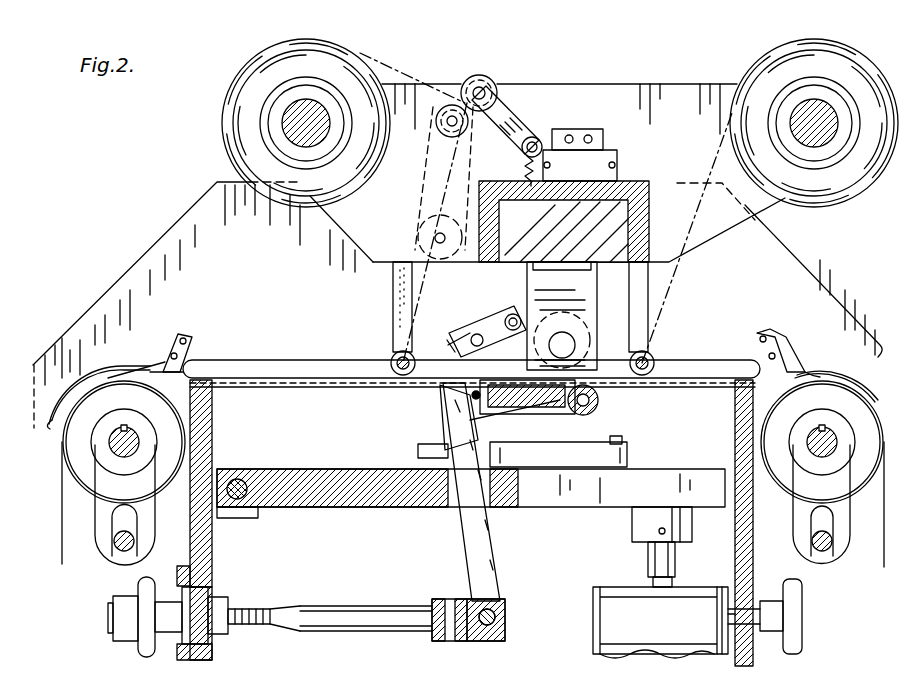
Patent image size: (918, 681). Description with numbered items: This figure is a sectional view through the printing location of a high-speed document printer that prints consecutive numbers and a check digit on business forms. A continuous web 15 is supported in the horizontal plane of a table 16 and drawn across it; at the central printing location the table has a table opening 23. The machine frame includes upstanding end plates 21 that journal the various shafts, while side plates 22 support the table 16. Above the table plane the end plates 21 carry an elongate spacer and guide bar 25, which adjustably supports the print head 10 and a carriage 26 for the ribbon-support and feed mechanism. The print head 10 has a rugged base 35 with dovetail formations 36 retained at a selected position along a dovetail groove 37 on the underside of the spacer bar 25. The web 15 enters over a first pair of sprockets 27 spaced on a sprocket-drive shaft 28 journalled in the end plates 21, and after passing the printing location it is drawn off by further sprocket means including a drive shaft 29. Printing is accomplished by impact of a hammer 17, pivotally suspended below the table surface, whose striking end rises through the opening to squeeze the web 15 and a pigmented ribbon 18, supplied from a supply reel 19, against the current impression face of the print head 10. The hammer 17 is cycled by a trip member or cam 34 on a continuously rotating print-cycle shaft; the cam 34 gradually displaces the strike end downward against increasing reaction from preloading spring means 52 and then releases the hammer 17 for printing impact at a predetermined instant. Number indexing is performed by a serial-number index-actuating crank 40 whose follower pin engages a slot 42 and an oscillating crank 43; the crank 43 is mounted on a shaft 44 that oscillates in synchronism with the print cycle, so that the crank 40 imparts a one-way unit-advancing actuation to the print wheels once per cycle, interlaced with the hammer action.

The print head 10 is at (578, 316).
The continuous web 15 is at (248, 372).
The table 16 is at (268, 387).
The hammer 17 is at (462, 505).
The pigmented ribbon 18 is at (722, 132).
The supply reel 19 is at (758, 66).
The end plates 21 is at (103, 300).
The side plates 22 is at (213, 420).
The table opening 23 is at (600, 392).
The spacer and guide bar 25 is at (628, 217).
The carriage 26 is at (708, 232).
The sprockets 27 is at (160, 495).
The sprocket-drive shaft 28 is at (118, 452).
The drive shaft 29 is at (816, 452).
The cam 34 is at (600, 412).
The base 35 is at (607, 336).
The dovetail formations 36 is at (552, 232).
The dovetail groove 37 is at (594, 232).
The index-actuating crank 40 is at (515, 313).
The slot 42 is at (478, 310).
The oscillating crank 43 is at (455, 340).
The shaft 44 is at (469, 330).
The preloading spring means 52 is at (522, 447).